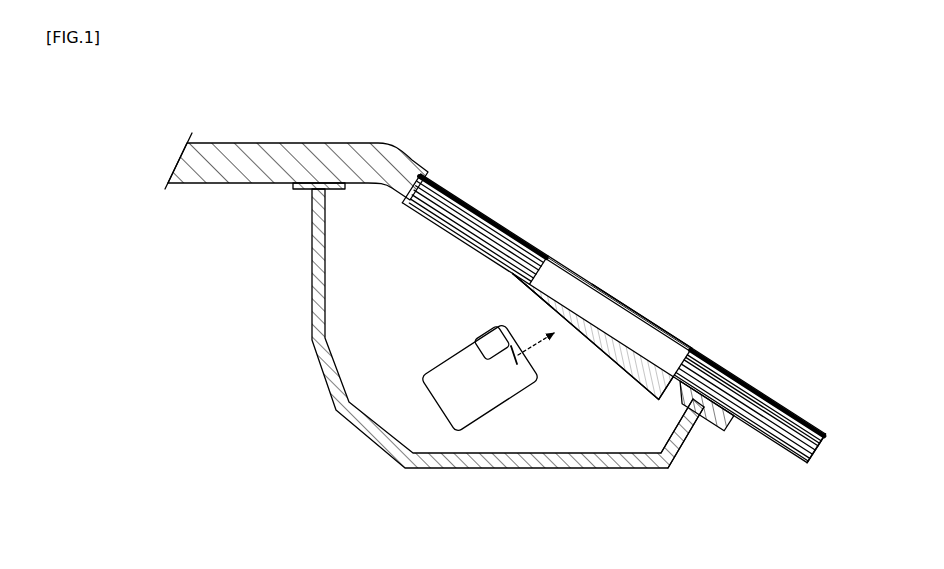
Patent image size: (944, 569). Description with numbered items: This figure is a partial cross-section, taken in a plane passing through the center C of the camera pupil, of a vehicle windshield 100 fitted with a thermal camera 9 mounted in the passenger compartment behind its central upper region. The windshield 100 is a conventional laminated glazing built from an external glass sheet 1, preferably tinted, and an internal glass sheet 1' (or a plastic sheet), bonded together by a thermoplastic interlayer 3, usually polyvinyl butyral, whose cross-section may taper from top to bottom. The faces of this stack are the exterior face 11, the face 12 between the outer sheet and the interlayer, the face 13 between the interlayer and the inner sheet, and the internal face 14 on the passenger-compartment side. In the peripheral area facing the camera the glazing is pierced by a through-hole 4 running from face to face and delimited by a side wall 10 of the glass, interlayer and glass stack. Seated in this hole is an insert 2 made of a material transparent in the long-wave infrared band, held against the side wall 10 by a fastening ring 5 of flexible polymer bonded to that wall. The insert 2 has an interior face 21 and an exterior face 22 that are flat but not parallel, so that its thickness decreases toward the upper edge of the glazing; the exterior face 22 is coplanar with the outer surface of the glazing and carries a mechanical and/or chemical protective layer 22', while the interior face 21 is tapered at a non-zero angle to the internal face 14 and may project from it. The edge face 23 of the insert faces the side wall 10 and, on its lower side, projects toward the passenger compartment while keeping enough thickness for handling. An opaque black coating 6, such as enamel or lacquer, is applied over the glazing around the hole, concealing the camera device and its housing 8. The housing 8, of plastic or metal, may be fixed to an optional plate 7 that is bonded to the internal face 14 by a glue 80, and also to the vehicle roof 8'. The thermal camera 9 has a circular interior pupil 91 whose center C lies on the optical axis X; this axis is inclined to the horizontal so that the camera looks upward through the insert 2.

The windshield 100 is at (228, 355).
The upper housing member 8' is at (296, 140).
The housing 8 is at (480, 328).
The glue 80 is at (682, 445).
The through-hole 4 is at (670, 312).
The opaque coating 6 is at (480, 210).
The plate 7 is at (438, 214).
The ring 5 is at (528, 250).
The external glass sheet 1 is at (775, 369).
The internal glass sheet 1' is at (722, 448).
The exterior face 11 is at (826, 430).
The face F2 12 is at (824, 451).
The face F3 13 is at (812, 450).
The internal face 14 is at (792, 452).
The insert 2 is at (565, 270).
The exterior face of the insert 22 is at (638, 272).
The protective layer 22' is at (659, 288).
The interior face of the insert 21 is at (625, 372).
The edge face 23 is at (660, 415).
The side wall 10 is at (543, 297).
The interlayer 3 is at (722, 428).
The thermal camera 9 is at (440, 362).
The pupil 91 is at (482, 346).
The center of the pupil C is at (507, 367).
The optical axis X is at (549, 346).